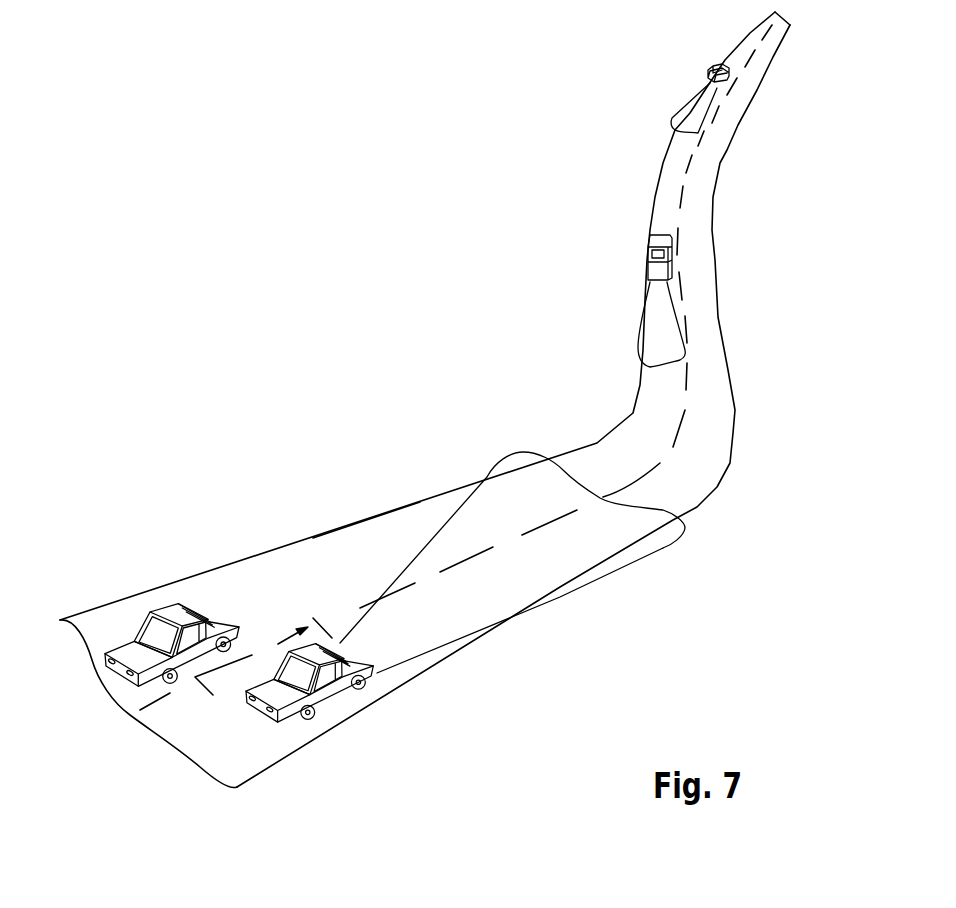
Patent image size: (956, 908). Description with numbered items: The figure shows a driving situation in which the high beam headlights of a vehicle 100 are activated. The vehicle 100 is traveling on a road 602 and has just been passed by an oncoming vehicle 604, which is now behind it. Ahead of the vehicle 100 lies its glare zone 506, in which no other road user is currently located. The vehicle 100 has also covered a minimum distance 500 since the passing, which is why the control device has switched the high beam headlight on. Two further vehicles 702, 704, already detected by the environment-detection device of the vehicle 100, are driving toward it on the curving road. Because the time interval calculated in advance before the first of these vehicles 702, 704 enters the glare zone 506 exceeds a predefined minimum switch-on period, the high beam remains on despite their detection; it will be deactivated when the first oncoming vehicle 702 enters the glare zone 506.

The vehicle 100 is at (323, 693).
The minimum distance 500 is at (268, 640).
The glare zone 506 is at (643, 556).
The road 602 is at (313, 541).
The oncoming vehicle 604 is at (170, 608).
The further vehicle 702 is at (655, 270).
The further vehicle 704 is at (707, 72).